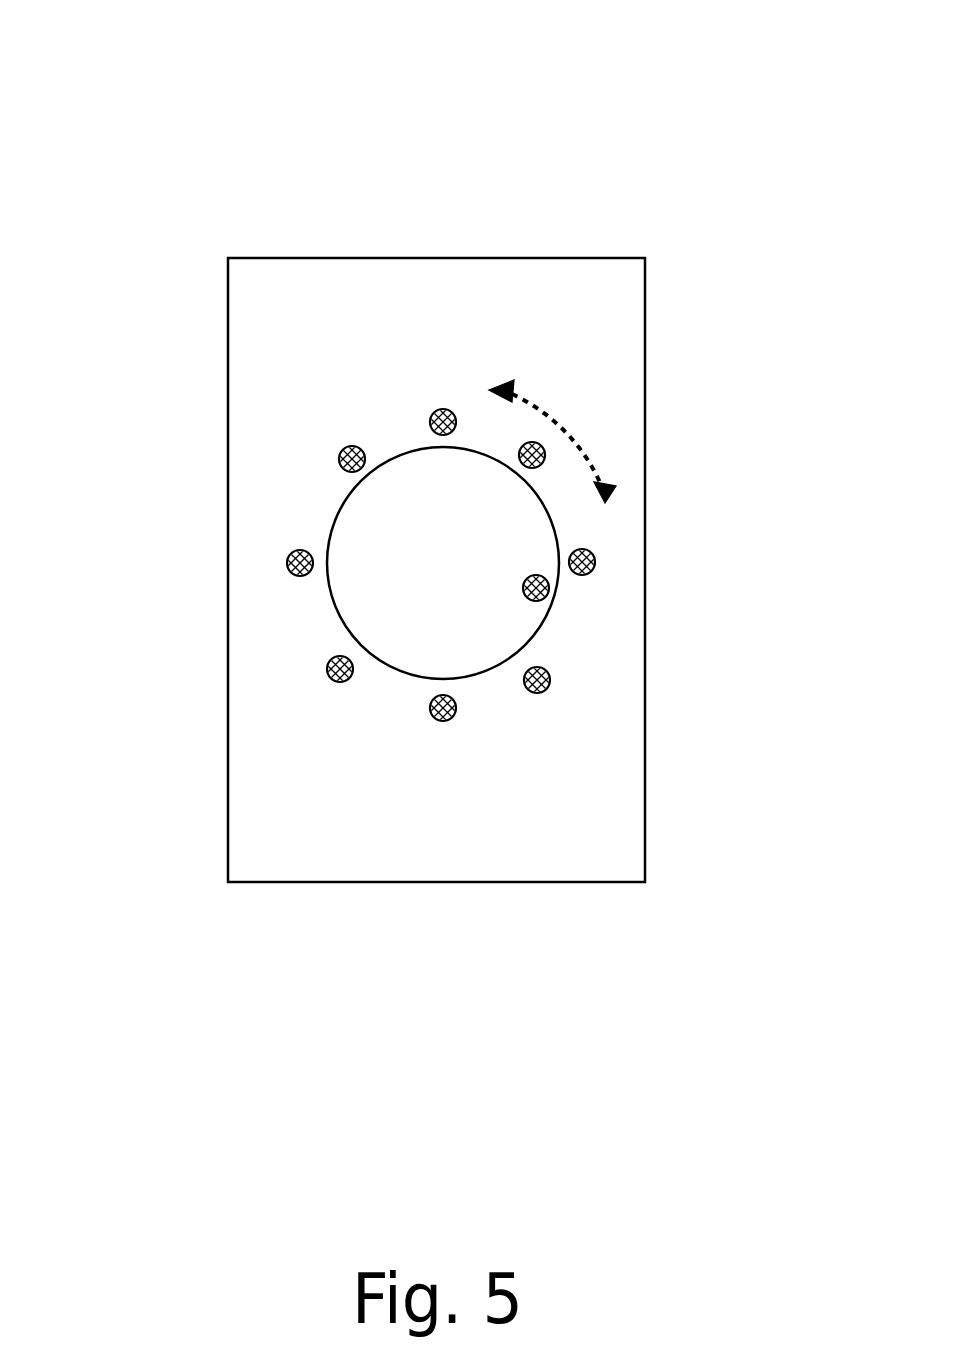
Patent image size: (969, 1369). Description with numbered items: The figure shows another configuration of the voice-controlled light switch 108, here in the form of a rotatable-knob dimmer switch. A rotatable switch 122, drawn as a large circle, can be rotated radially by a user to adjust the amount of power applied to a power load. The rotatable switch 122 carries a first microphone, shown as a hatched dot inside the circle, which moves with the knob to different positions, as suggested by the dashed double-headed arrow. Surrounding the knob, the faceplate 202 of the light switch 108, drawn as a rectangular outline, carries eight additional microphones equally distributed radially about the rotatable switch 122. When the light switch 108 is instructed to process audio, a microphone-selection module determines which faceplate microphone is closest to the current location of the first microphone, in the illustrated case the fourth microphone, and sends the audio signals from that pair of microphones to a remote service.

The voice-controlled light switch 108 is at (118, 46).
The faceplate 202 is at (300, 272).
The rotatable switch 122 is at (353, 553).